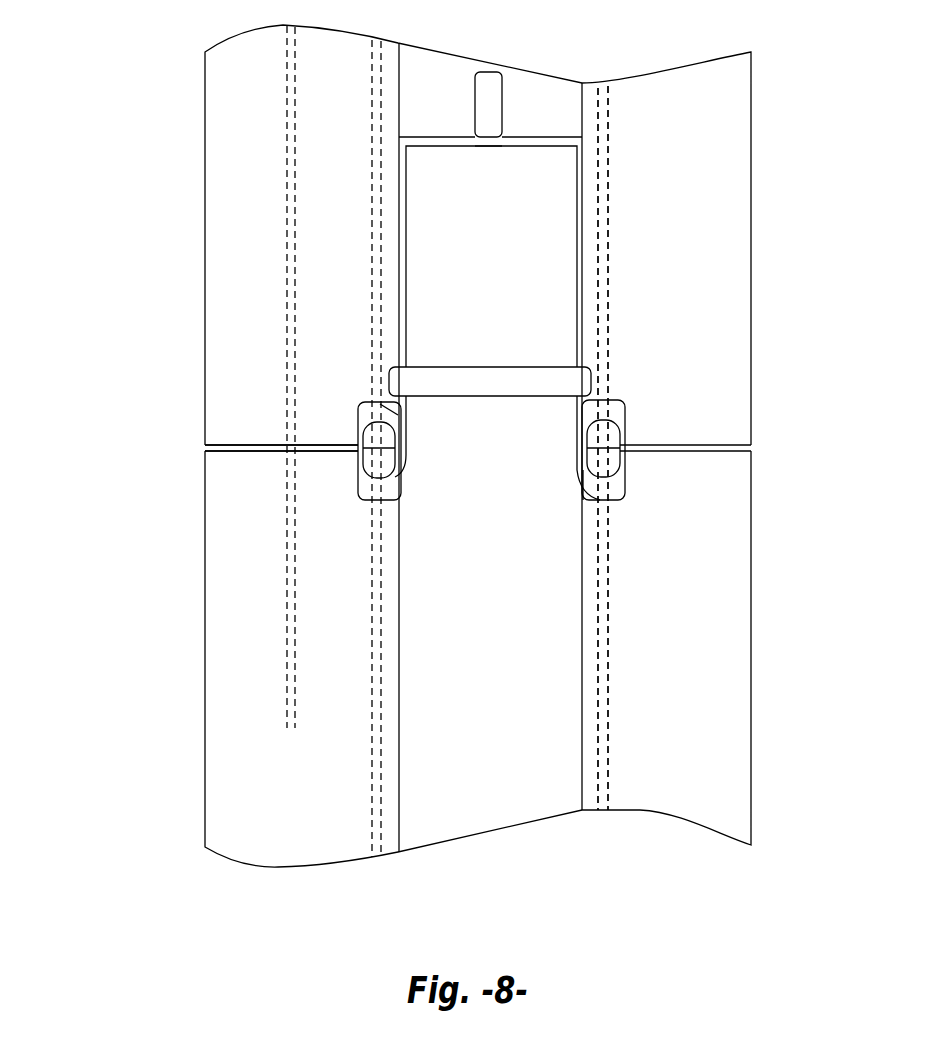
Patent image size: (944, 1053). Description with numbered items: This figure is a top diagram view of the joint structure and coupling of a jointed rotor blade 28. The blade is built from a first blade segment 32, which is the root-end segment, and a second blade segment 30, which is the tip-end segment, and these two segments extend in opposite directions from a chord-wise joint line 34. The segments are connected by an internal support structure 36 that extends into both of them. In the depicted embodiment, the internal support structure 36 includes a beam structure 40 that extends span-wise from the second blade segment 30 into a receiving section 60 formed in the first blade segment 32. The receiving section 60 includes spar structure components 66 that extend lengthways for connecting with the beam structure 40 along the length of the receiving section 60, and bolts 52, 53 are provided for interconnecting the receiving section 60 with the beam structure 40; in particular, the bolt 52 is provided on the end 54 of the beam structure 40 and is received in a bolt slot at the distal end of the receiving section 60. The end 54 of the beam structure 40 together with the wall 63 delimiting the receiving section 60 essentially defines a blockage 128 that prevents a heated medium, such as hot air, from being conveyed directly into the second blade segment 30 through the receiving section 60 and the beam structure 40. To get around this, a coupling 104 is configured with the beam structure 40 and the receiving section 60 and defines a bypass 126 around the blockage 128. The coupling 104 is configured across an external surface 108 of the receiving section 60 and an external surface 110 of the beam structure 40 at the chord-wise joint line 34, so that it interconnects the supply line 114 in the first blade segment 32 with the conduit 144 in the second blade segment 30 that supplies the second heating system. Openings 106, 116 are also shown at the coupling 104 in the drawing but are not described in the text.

The jointed rotor blade 28 is at (449, 443).
The second blade segment 30 is at (752, 614).
The first blade segment 32 is at (205, 213).
The chord-wise joint line 34 is at (765, 438).
The internal support structure 36 is at (328, 296).
The beam structure 40 is at (580, 280).
The bolt 52 is at (500, 78).
The bolt 53 is at (478, 367).
The end of the beam structure 54 is at (532, 137).
The receiving section 60 is at (398, 200).
The wall 63 is at (449, 137).
The spar structure component 66 is at (584, 92).
The coupling 104 is at (334, 423).
The right clamp opening 106 is at (626, 486).
The external surface of the receiving section 108 is at (380, 406).
The external surface of the beam structure 110 is at (603, 497).
The supply line 114 is at (607, 150).
The left clamp opening 116 is at (358, 468).
The bypass 126 is at (632, 411).
The blockage 128 is at (508, 152).
The conduit 144 is at (607, 610).